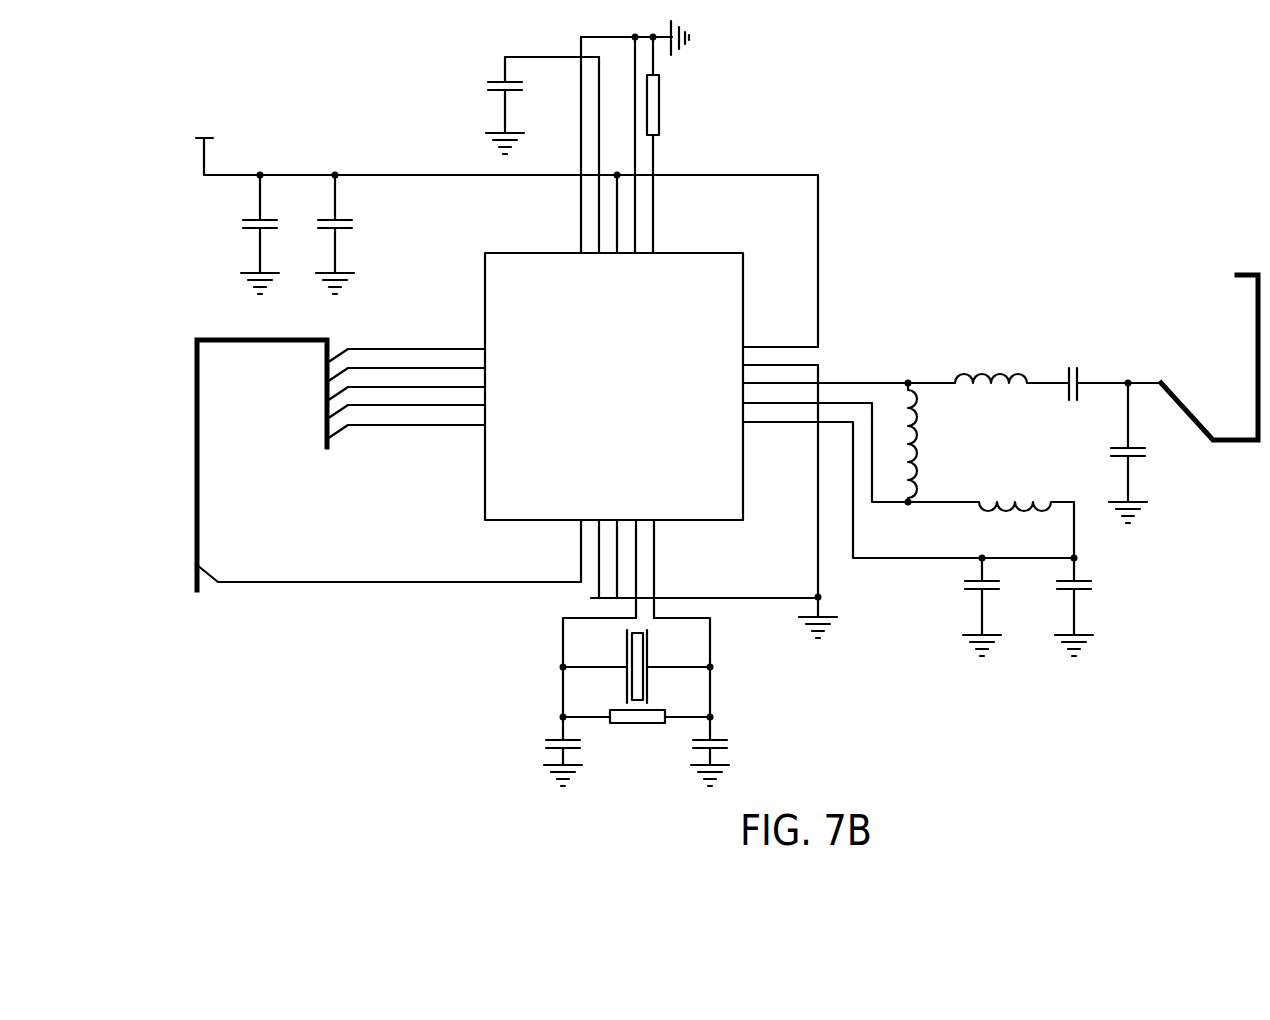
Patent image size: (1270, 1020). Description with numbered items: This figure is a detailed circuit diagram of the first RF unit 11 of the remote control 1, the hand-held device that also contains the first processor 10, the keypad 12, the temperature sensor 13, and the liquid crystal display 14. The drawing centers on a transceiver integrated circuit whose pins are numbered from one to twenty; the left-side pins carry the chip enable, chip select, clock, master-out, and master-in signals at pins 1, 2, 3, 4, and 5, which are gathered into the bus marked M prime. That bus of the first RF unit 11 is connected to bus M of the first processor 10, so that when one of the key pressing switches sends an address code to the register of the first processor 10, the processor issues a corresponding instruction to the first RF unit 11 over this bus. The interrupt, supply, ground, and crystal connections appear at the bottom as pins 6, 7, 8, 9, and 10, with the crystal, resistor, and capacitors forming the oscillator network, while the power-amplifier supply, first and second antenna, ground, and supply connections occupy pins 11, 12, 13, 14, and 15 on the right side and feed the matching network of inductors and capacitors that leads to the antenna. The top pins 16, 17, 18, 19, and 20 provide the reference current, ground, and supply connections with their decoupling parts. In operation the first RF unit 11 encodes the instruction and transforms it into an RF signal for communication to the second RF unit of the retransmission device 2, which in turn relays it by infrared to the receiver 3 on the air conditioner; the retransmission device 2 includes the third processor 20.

The first RF unit 11 is at (913, 272).
The remote control 1 is at (406, 348).
The retransmission device 2 is at (406, 367).
The receiver 3 is at (406, 386).
The MOSI pin 4 is at (406, 404).
The MISO pin 5 is at (406, 424).
The IRQ pin 6 is at (581, 551).
The VDD pin 7 is at (599, 559).
The VSS pin 8 is at (617, 559).
The XC2 pin 9 is at (635, 569).
The first processor 10 is at (653, 569).
The keypad 12 is at (807, 395).
The temperature sensor 13 is at (825, 375).
The liquid crystal display (LCD) display 14 is at (780, 357).
The VDD pin 15 is at (780, 339).
The IREF pin 16 is at (653, 194).
The VSS pin 17 is at (635, 145).
The VDD pin 18 is at (617, 214).
The DVDD pin 19 is at (599, 155).
The third processor 20 is at (581, 145).